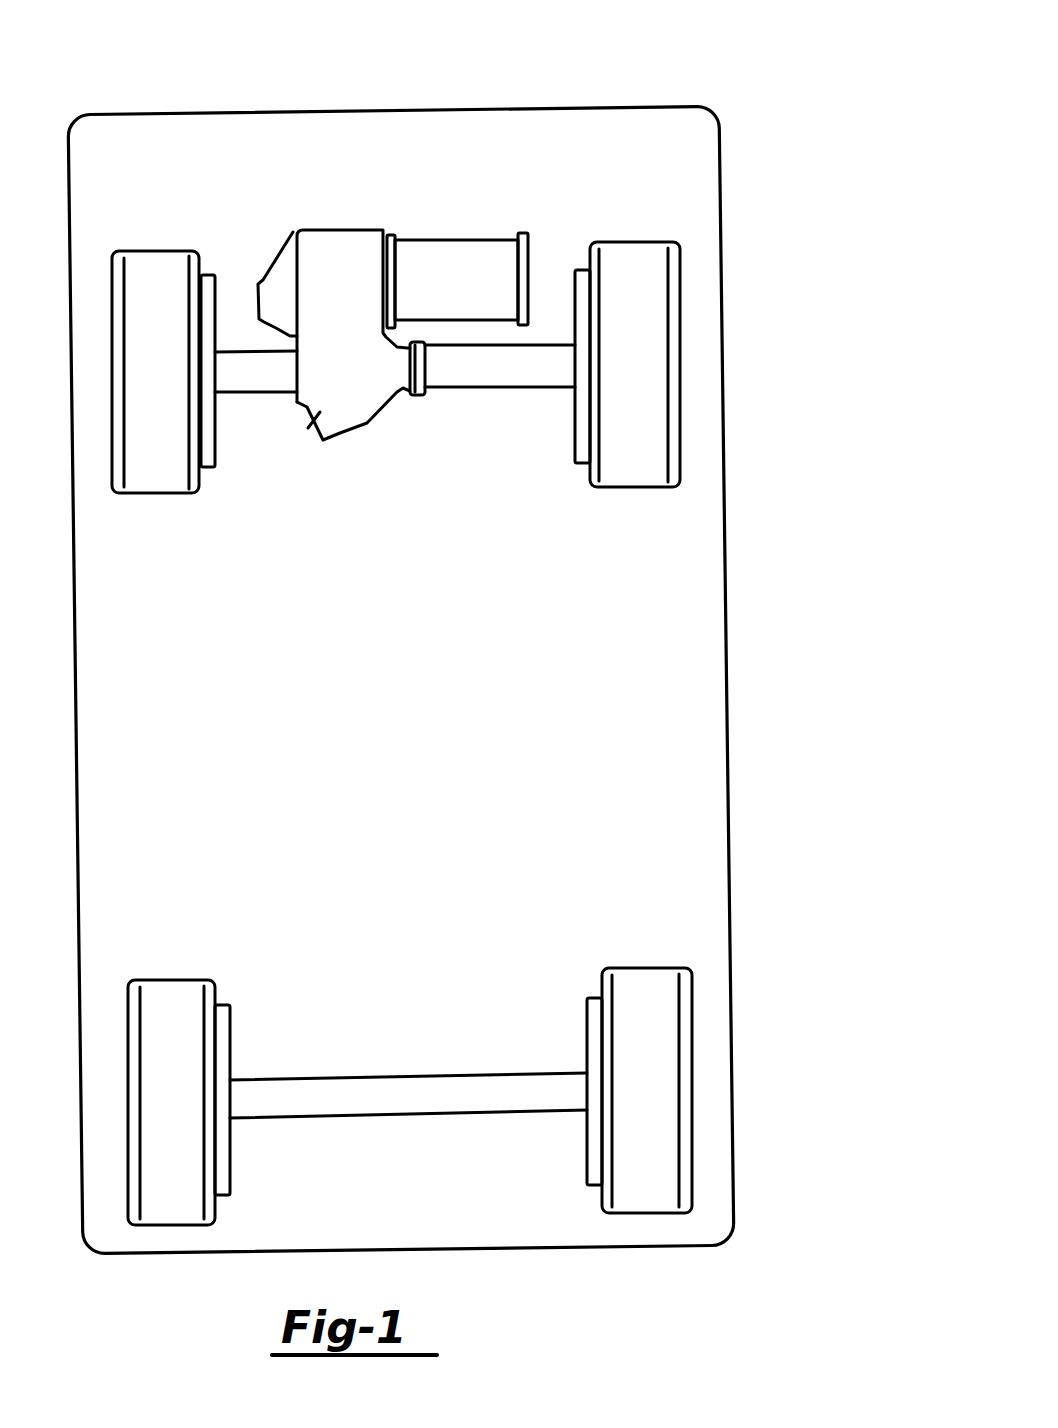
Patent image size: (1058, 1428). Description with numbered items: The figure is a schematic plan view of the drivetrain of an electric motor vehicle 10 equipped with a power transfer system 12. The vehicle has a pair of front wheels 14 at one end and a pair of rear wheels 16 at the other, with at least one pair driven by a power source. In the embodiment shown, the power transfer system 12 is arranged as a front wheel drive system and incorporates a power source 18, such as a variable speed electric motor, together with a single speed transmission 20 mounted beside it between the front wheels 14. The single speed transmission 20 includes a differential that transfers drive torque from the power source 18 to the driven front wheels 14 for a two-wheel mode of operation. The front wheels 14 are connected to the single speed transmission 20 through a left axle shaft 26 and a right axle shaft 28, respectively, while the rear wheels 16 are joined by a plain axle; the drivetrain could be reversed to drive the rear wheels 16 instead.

The electric motor vehicle 10 is at (743, 88).
The power transfer system 12 is at (261, 549).
The front wheels 14 is at (150, 302).
The rear wheels 16 is at (163, 1013).
The power source 18 is at (473, 260).
The single speed transmission 20 is at (302, 397).
The left axle shaft 26 is at (273, 373).
The right axle shaft 28 is at (542, 370).